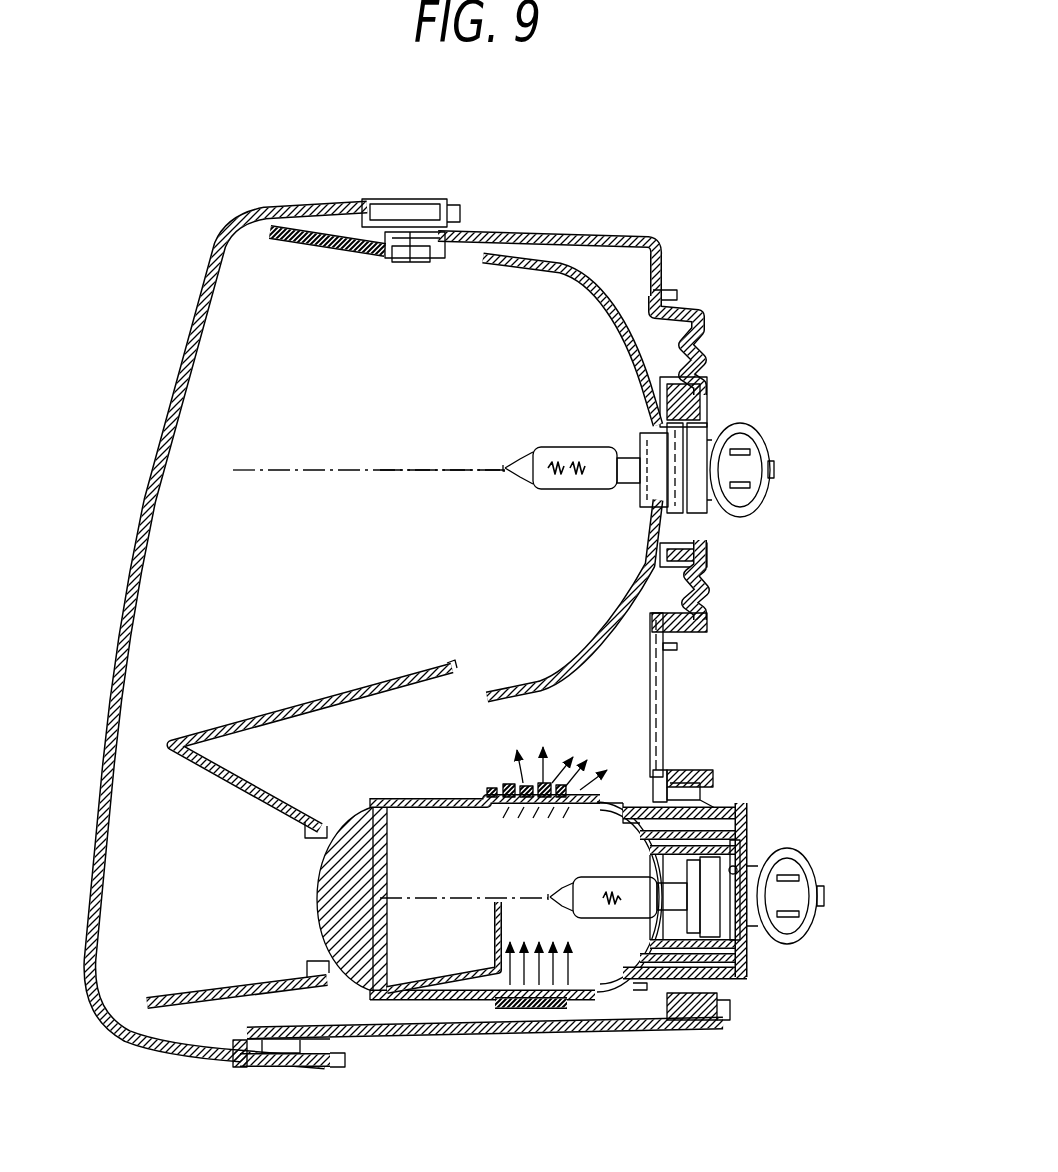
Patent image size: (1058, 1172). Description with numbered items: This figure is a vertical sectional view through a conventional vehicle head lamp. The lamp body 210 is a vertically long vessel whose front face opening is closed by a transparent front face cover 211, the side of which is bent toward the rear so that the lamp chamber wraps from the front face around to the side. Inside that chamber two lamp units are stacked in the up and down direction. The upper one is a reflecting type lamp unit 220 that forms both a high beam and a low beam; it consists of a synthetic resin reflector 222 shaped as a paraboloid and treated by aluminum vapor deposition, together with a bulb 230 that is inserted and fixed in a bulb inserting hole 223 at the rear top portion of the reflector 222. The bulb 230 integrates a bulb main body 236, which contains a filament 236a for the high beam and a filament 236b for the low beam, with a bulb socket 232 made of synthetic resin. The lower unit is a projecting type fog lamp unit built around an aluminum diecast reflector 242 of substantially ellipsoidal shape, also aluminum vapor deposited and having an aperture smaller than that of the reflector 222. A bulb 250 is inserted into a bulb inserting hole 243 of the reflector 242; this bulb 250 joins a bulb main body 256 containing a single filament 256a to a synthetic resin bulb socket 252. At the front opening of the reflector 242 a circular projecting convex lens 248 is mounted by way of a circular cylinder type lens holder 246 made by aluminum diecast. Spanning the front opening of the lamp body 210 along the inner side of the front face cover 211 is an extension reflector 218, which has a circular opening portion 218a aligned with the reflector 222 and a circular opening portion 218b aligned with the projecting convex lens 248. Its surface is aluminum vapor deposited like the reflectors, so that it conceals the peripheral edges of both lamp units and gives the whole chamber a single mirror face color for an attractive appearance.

The lamp body 210 is at (573, 225).
The front face cover 211 is at (148, 521).
The reflector 222 is at (603, 293).
The bulb 230 is at (560, 477).
The bulb main body 236 is at (567, 500).
The filament for a high beam 236a is at (575, 466).
The filament for a low beam 236b is at (553, 452).
The bulb inserting hole 223 is at (678, 447).
The bulb socket 232 is at (762, 494).
The reflecting type lamp unit 220 is at (449, 500).
The extension reflector 218 is at (197, 1009).
The circular opening portion 218a is at (447, 666).
The circular opening portion 218b is at (312, 962).
The projecting convex lens 248 is at (350, 967).
The lens holder 246 is at (447, 1003).
The reflector 242 is at (613, 990).
The bulb 250 is at (571, 963).
The bulb main body 256 is at (615, 925).
The filament 256a is at (600, 887).
The bulb inserting hole 243 is at (737, 867).
The bulb socket 252 is at (810, 914).